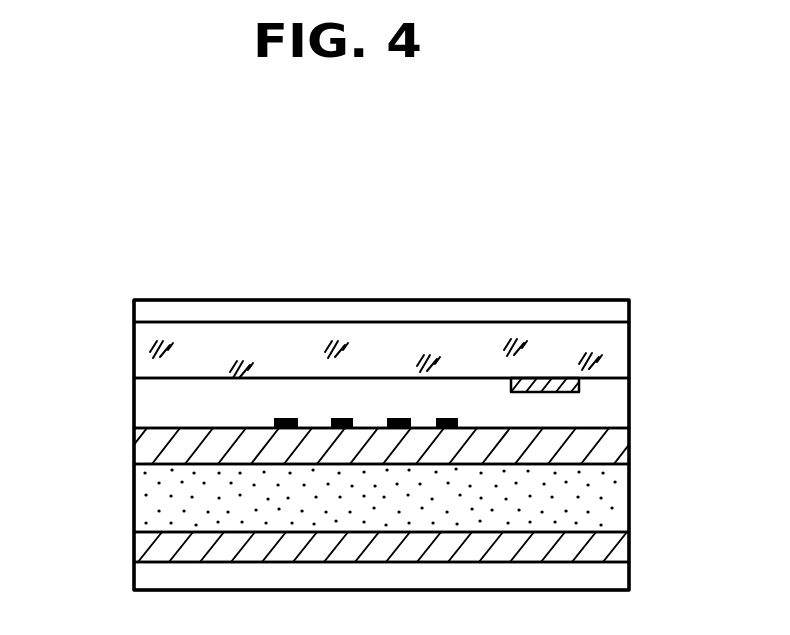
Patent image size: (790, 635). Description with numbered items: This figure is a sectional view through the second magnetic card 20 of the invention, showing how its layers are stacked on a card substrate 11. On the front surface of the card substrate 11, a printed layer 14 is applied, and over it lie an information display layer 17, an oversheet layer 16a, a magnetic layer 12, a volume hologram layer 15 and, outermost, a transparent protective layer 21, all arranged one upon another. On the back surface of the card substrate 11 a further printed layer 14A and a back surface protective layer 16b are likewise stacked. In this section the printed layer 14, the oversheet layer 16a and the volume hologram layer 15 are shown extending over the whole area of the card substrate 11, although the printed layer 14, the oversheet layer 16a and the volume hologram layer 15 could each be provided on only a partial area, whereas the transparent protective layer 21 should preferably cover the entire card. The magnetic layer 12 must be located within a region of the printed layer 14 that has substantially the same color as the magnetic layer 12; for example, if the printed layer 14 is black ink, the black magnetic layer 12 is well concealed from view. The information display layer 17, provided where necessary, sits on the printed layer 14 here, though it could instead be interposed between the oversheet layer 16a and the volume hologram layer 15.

The magnetic card 20 is at (247, 246).
The transparent protective layer 21 is at (555, 299).
The volume hologram layer 15 is at (630, 343).
The oversheet layer 16a is at (134, 405).
The magnetic layer 12 is at (580, 384).
The information display layer 17 is at (462, 406).
The printed layer 14 is at (134, 451).
The card substrate 11 is at (134, 505).
The printed layer 14A is at (134, 547).
The back surface protective layer 16b is at (134, 581).